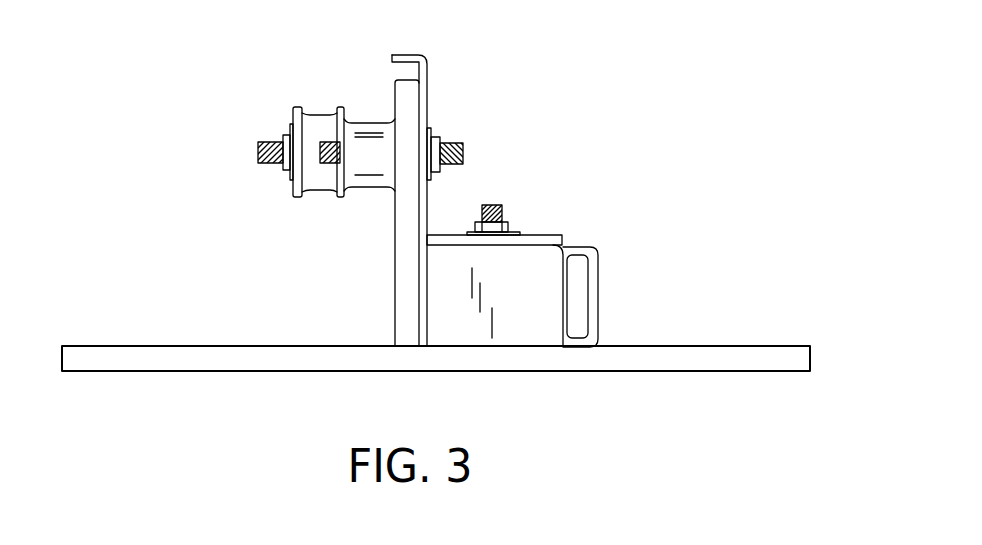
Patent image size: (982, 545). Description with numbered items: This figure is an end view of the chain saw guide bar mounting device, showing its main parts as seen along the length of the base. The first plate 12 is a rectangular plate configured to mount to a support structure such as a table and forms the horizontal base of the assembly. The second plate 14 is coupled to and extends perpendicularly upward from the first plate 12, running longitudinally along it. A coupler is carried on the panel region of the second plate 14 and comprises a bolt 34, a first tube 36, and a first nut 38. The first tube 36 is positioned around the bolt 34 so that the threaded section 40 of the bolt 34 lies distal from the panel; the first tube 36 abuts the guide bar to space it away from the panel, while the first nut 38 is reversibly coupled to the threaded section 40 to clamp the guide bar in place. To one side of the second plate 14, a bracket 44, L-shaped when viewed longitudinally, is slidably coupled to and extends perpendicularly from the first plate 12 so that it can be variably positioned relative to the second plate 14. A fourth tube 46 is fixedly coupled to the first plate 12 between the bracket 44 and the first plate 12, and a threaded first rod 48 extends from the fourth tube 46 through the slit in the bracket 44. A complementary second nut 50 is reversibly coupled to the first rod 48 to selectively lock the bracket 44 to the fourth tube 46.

The first plate 12 is at (766, 362).
The second plate 14 is at (407, 296).
The bolt 34 is at (332, 115).
The first tube 36 is at (370, 172).
The first nut 38 is at (440, 140).
The threaded section 40 is at (333, 115).
The bracket 44 is at (542, 240).
The fourth tube 46 is at (592, 258).
The first rod 48 is at (495, 207).
The second nut 50 is at (497, 227).